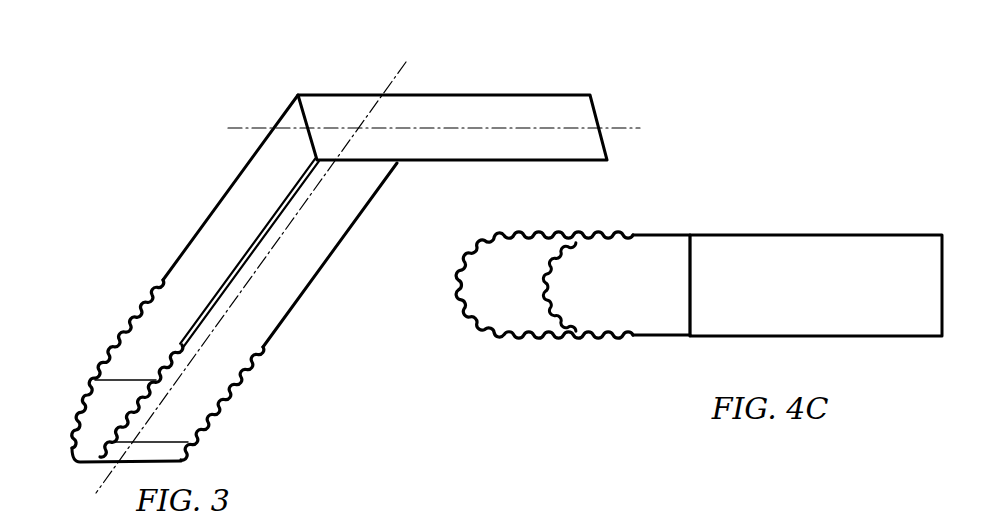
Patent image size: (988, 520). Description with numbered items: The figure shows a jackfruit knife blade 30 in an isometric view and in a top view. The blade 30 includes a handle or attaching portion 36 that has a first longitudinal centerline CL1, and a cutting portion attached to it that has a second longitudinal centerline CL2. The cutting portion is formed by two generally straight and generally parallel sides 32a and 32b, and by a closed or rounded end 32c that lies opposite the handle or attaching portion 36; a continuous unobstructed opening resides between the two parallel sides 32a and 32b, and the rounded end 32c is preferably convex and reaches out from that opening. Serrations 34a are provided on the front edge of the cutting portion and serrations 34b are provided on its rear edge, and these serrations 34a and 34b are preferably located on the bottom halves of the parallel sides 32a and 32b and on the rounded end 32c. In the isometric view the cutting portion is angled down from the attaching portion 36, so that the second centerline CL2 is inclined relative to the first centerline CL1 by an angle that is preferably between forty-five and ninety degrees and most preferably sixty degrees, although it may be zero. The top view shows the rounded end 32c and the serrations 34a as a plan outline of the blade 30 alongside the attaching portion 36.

In FIG. 3, the jackfruit knife blade 30 is at (173, 121).
In FIG. 4C, the jackfruit knife blade 30 is at (706, 209).
In FIG. 3, the first side of cutting portion 32a is at (222, 271).
In FIG. 3, the second side of cutting portion 32b is at (297, 251).
In FIG. 3, the closed or rounded end 32c is at (95, 427).
In FIG. 3, the serrations on front edge 34a is at (112, 352).
In FIG. 4C, the serrations on front edge 34a is at (460, 307).
In FIG. 3, the serrations on rear edge 34b is at (227, 398).
In FIG. 3, the handle or attaching portion 36 is at (476, 125).
In FIG. 4C, the handle or attaching portion 36 is at (759, 313).
In FIG. 3, the first longitudinal centerline CL1 is at (258, 128).
In FIG. 3, the second longitudinal centerline CL2 is at (395, 83).